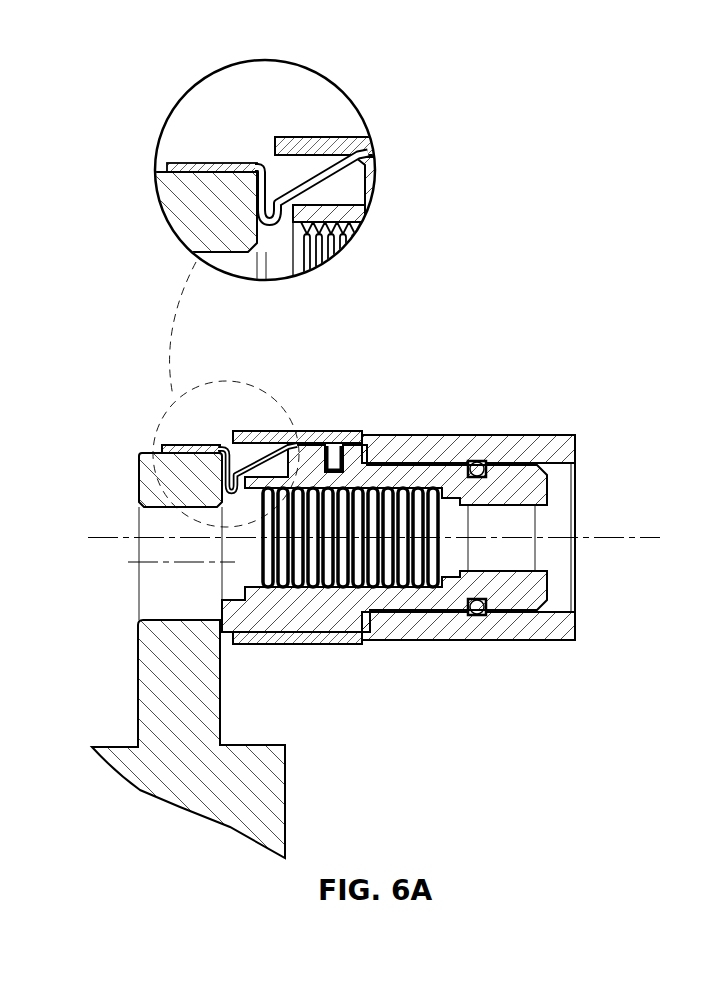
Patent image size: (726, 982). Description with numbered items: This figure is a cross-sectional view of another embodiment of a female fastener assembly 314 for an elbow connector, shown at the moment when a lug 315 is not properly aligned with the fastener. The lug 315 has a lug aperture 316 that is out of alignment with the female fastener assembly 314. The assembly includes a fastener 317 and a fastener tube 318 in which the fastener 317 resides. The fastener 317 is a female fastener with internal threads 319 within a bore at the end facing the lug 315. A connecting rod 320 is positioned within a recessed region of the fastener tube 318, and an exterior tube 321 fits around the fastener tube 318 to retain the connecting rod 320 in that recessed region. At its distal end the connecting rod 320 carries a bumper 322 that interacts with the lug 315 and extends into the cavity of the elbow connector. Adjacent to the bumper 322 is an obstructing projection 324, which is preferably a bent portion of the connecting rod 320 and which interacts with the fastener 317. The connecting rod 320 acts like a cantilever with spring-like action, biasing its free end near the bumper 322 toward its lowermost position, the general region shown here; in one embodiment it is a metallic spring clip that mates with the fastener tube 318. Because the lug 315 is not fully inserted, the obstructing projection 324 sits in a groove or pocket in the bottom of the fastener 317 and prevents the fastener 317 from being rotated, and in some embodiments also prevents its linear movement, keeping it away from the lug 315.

The female fastener assembly 314 is at (484, 380).
The lug 315 is at (185, 207).
The lug aperture 316 is at (152, 529).
The fastener 317 is at (358, 220).
The fastener tube 318 is at (372, 182).
The internal threads 319 is at (250, 572).
The connecting rod 320 is at (312, 178).
The exterior tube 321 is at (340, 137).
The bumper 322 is at (178, 162).
The obstructing projection 324 is at (270, 228).